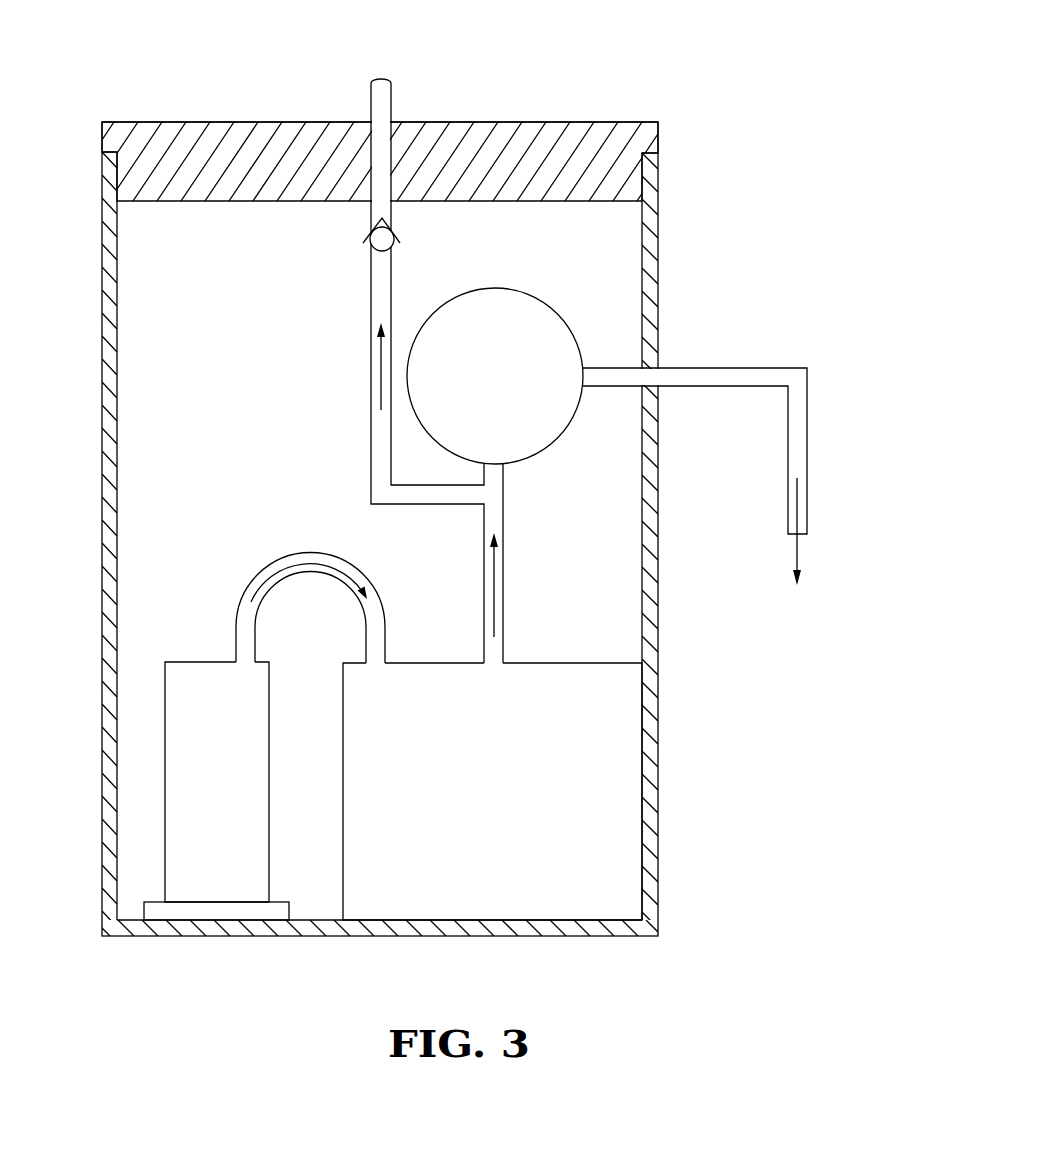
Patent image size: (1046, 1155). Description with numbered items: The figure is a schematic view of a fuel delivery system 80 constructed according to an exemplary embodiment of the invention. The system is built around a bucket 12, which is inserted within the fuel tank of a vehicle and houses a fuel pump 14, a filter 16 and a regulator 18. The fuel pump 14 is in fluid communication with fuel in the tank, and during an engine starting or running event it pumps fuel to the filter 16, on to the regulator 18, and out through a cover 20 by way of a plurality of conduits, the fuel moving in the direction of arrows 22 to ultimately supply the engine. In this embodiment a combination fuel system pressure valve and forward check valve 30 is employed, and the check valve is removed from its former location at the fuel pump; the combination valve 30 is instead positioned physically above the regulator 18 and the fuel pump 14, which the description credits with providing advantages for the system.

The fuel delivery system 80 is at (737, 76).
The bucket 12 is at (658, 283).
The cover 20 is at (570, 124).
The arrows 22 is at (378, 364).
The combination fuel system pressure valve and forward check valve 30 is at (370, 247).
The regulator 18 is at (527, 292).
The fuel pump 14 is at (177, 839).
The filter 16 is at (627, 815).